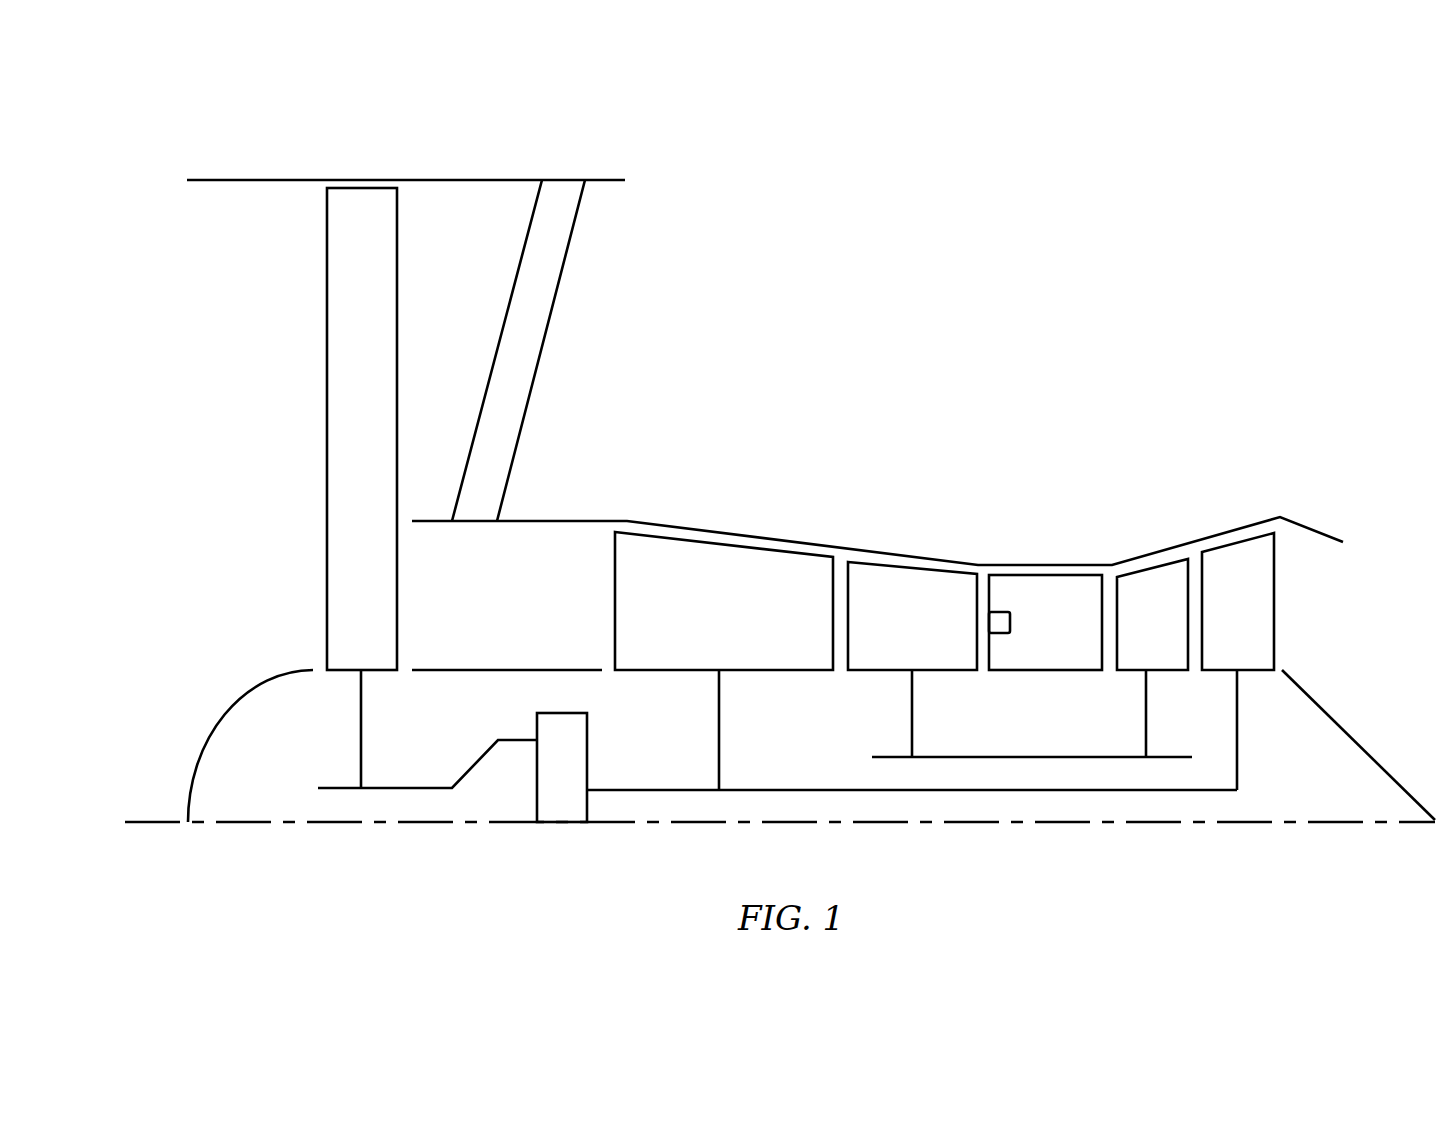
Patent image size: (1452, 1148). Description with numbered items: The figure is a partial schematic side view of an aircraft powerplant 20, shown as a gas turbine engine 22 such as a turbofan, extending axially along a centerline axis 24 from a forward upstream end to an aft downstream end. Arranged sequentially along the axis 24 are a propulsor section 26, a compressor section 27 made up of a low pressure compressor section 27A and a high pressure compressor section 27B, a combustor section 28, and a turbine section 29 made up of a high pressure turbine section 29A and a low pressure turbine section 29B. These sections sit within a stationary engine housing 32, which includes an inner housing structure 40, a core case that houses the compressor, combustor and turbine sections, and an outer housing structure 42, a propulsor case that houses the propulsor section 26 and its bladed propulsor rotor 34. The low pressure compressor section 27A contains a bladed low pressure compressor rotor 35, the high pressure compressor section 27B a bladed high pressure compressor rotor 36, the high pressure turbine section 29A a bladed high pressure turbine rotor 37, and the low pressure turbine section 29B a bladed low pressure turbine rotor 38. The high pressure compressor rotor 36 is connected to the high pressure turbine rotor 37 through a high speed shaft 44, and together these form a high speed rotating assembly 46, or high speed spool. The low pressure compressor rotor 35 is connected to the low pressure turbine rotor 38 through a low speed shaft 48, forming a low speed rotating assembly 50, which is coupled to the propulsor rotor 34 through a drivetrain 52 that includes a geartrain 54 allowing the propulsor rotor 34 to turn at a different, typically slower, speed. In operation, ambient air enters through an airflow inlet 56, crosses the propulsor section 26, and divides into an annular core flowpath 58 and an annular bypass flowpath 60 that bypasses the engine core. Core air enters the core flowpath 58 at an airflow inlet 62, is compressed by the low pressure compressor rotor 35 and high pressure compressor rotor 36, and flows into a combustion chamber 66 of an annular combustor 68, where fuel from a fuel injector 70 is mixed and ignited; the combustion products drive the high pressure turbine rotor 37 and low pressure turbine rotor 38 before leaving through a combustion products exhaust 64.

The powerplant 20 is at (763, 490).
The gas turbine engine 22 is at (200, 128).
The axis 24 is at (135, 824).
The propulsor section 26 is at (363, 160).
The compressor section 27 is at (977, 365).
The low pressure compressor section 27A is at (833, 452).
The high pressure compressor section 27B is at (847, 452).
The combustor section 28 is at (983, 452).
The turbine section 29 is at (1117, 365).
The high pressure turbine section 29A is at (1188, 452).
The low pressure turbine section 29B is at (1202, 452).
The engine housing 32 is at (643, 140).
The propulsor rotor 34 is at (343, 648).
The low pressure compressor rotor 35 is at (695, 621).
The high pressure compressor rotor 36 is at (895, 636).
The high pressure turbine rotor 37 is at (1138, 641).
The low pressure turbine rotor 38 is at (1223, 630).
The inner housing structure 40 is at (574, 520).
The outer housing structure 42 is at (531, 178).
The high speed shaft 44 is at (968, 756).
The high speed rotating assembly 46 is at (1190, 740).
The low speed shaft 48 is at (833, 790).
The low speed rotating assembly 50 is at (1258, 776).
The drivetrain 52 is at (565, 845).
The geartrain 54 is at (547, 785).
The airflow inlet 56 is at (178, 415).
The core flowpath 58 is at (488, 614).
The bypass flowpath 60 is at (440, 343).
The airflow inlet 62 is at (396, 583).
The combustion products exhaust 64 is at (1348, 613).
The combustion chamber 66 is at (1040, 645).
The combustor 68 is at (1053, 574).
The fuel injector 70 is at (988, 625).